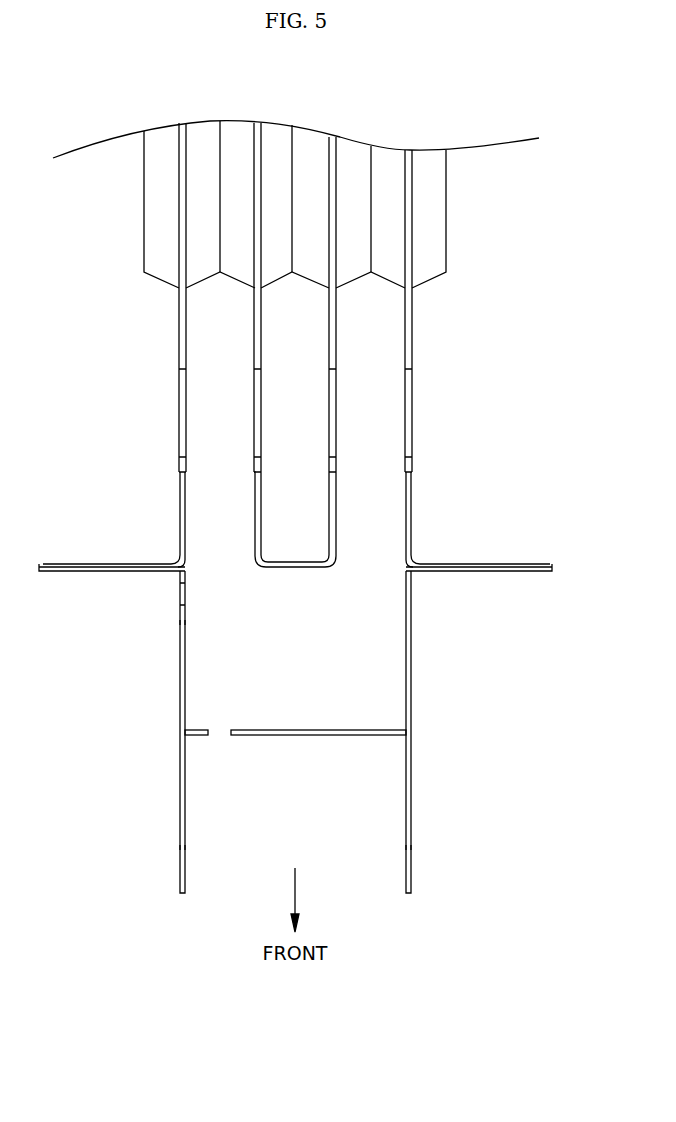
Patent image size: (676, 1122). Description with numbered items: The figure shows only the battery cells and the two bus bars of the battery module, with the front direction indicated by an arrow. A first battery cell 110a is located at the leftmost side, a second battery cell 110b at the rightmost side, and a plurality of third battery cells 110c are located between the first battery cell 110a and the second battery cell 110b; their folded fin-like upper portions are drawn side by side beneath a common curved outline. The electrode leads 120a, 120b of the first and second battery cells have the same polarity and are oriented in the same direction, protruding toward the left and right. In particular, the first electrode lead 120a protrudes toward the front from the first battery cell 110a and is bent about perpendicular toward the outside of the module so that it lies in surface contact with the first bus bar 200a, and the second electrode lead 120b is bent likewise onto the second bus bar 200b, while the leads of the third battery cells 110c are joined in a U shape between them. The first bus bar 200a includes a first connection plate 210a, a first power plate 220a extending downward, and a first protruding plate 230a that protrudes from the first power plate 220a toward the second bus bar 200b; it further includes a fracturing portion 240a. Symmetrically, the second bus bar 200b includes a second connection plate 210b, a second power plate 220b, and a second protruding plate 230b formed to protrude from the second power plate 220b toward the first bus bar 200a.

The first battery cell 110a is at (202, 138).
The second battery cell 110b is at (314, 142).
The third battery cell 110c is at (388, 158).
The first electrode lead 120a is at (181, 494).
The second electrode lead 120b is at (411, 494).
The first bus bar 200a is at (181, 875).
The second bus bar 200b is at (411, 875).
The first connection plate 210a is at (70, 573).
The second connection plate 210b is at (508, 573).
The first power plate 220a is at (181, 676).
The second power plate 220b is at (411, 676).
The first protruding plate 230a is at (206, 729).
The second protruding plate 230b is at (283, 729).
The fracturing portion 240a is at (181, 597).